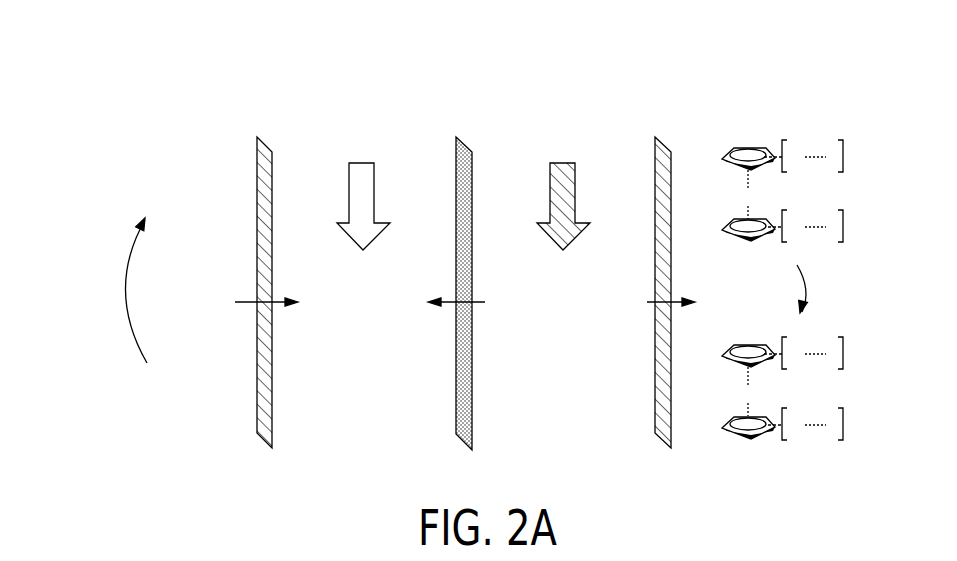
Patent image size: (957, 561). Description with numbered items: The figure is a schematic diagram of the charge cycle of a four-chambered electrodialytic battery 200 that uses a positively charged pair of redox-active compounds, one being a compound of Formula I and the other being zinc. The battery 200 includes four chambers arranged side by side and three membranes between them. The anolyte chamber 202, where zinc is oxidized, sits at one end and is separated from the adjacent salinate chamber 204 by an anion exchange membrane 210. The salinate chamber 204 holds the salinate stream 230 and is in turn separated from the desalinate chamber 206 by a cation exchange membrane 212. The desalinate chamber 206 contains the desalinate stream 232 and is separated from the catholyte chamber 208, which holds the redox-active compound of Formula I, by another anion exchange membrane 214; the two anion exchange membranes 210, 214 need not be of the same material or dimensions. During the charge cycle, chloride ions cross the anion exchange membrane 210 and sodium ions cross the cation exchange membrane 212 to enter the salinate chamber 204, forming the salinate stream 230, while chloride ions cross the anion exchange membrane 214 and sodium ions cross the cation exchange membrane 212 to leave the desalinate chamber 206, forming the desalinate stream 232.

The electrochemical desalination system 200 is at (122, 78).
The anolyte chamber 202 is at (208, 285).
The salinate chamber 204 is at (378, 357).
The desalinate chamber 206 is at (580, 357).
The catholyte chamber 208 is at (780, 309).
The anion exchange membrane 210 is at (272, 418).
The cation exchange membrane 212 is at (472, 390).
The anion exchange membrane 214 is at (671, 288).
The salinate stream 230 is at (355, 243).
The desalinate stream 232 is at (563, 248).